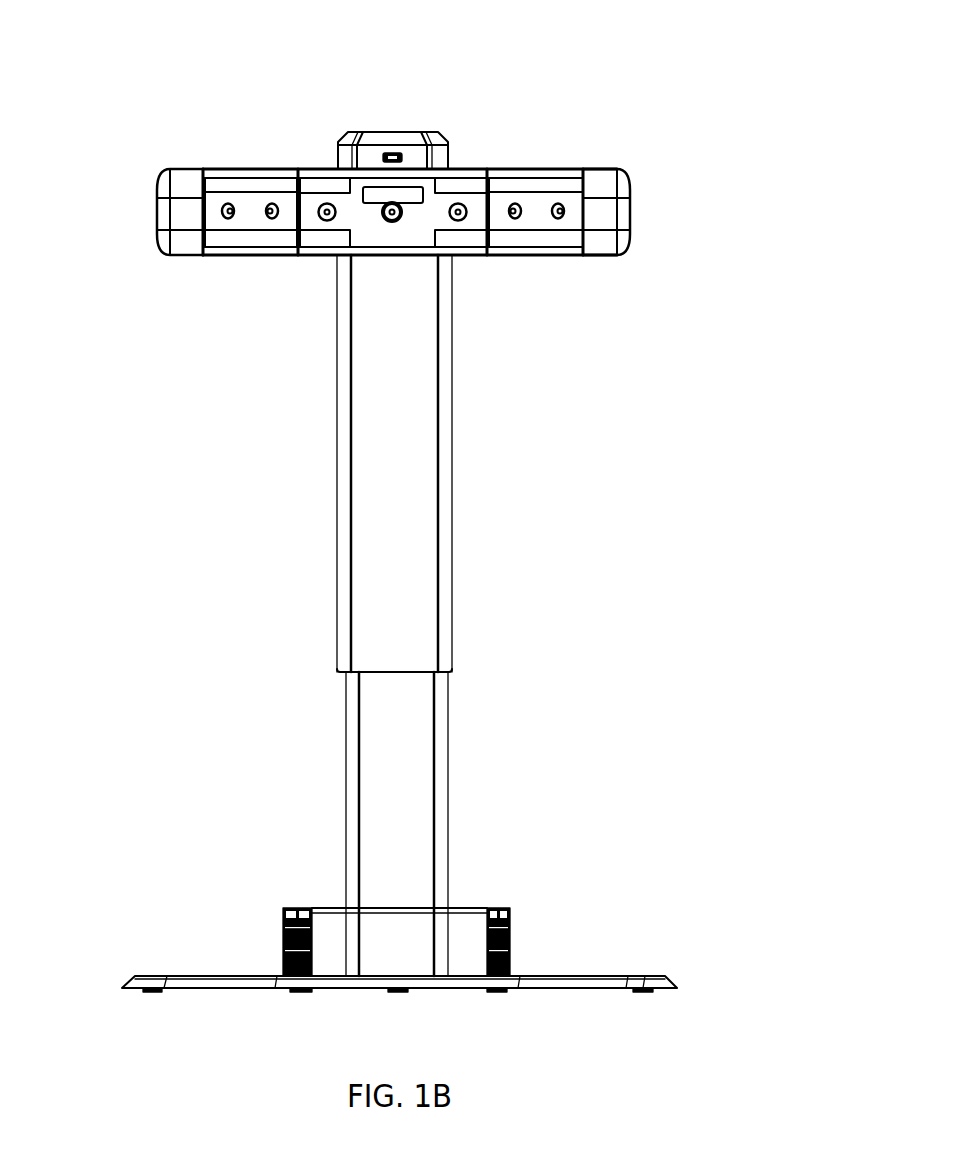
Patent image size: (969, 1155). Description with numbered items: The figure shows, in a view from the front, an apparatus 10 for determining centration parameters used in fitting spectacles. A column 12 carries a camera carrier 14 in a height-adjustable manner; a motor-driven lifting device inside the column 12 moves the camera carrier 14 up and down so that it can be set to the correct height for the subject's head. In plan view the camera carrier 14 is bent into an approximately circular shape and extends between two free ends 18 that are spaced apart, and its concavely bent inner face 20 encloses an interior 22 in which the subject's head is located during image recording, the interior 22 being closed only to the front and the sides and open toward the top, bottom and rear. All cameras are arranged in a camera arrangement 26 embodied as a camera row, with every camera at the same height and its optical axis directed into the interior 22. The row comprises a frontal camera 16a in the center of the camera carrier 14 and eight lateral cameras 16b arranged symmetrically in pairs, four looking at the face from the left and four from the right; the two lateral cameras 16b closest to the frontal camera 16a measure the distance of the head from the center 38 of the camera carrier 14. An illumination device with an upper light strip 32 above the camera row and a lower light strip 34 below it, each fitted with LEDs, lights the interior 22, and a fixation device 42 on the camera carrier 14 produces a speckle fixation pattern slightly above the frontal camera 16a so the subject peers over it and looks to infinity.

The apparatus 10 is at (640, 105).
The column 12 is at (445, 640).
The camera carrier 14 is at (200, 169).
The frontal camera 16a is at (457, 204).
The lateral cameras 16b is at (240, 213).
The free ends 18 is at (178, 243).
The inner face 20 is at (367, 222).
The interior 22 is at (496, 297).
The camera arrangement 26 is at (224, 282).
The upper light strip 32 is at (208, 205).
The lower light strip 34 is at (250, 238).
The center 38 is at (393, 228).
The fixation device 42 is at (382, 190).